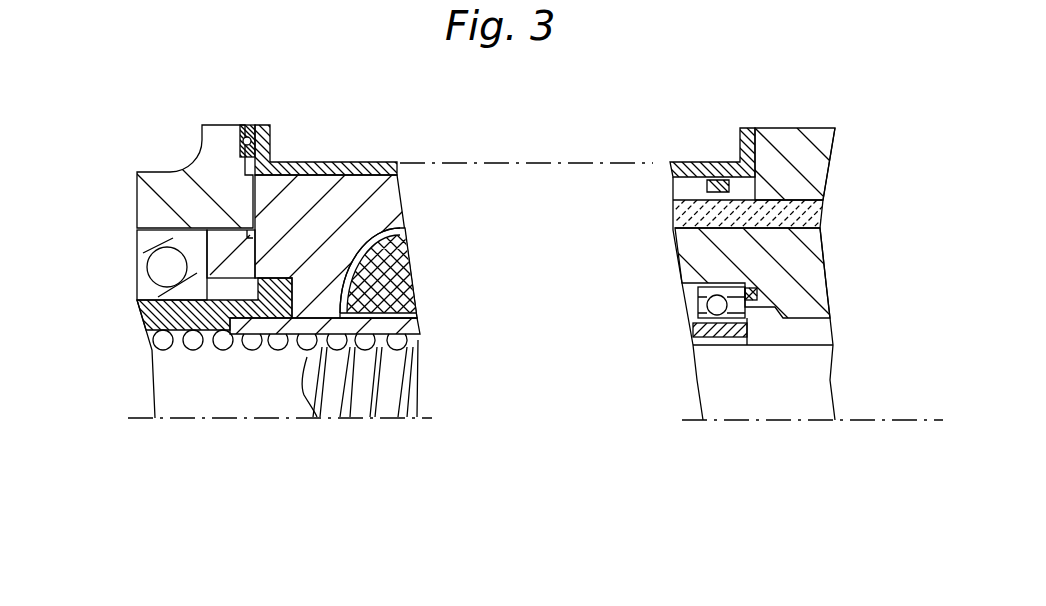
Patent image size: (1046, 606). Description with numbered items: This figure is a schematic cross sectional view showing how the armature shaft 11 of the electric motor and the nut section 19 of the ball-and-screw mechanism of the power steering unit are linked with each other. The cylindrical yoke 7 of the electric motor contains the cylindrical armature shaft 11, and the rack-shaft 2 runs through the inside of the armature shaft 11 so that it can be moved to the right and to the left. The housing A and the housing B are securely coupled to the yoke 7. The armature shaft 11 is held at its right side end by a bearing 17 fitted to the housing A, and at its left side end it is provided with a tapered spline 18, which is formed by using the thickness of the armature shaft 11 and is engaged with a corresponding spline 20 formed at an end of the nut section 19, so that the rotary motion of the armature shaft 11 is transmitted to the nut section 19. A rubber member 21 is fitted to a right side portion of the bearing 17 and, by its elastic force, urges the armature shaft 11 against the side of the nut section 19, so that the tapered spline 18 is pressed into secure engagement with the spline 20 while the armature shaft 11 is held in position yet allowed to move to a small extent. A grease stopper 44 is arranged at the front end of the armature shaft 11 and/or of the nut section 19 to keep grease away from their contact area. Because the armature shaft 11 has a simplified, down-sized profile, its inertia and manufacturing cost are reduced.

The rack-shaft 2 is at (393, 383).
The yoke 7 is at (358, 163).
The armature shaft 11 is at (322, 385).
The bearing 17 is at (722, 347).
The tapered spline 18 is at (283, 347).
The nut section 19 is at (145, 325).
The spline 20 is at (270, 275).
The rubber member 21 is at (758, 295).
The grease stopper 44 is at (237, 350).
The housing A is at (792, 138).
The housing B is at (173, 180).